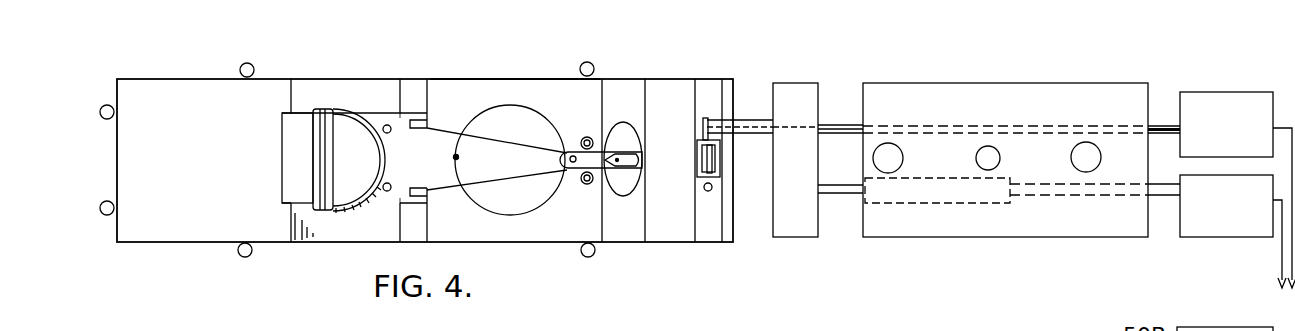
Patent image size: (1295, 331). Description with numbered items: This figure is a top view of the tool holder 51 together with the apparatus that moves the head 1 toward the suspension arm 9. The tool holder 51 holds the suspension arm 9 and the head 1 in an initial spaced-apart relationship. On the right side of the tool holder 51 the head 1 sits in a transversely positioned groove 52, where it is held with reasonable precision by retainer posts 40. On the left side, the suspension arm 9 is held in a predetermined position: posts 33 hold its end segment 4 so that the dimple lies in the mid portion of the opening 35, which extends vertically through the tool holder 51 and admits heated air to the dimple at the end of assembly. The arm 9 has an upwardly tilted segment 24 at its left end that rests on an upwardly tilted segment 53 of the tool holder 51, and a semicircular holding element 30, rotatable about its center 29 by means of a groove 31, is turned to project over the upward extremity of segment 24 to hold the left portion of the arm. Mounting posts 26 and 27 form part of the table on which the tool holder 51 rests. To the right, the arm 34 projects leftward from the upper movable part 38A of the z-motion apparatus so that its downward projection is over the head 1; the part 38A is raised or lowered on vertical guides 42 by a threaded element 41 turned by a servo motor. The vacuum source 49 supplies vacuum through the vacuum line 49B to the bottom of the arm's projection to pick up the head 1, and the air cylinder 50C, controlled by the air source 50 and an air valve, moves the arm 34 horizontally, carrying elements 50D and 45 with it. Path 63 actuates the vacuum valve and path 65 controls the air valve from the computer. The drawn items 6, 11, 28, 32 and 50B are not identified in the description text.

The head 1 is at (697, 160).
The end segment 4 is at (563, 175).
The pivot pin 6 is at (572, 156).
The suspension arm 9 is at (493, 145).
The plunger rod 11 is at (562, 160).
The upwardly tilted segment 24 is at (424, 167).
The mounting post 26 is at (113, 205).
The mounting post 27 is at (240, 70).
The pins 28 is at (387, 125).
The center 29 is at (330, 162).
The semicircular holding element 30 is at (300, 155).
The groove 31 is at (330, 107).
The cam disc 32 is at (458, 155).
The posts 33 is at (587, 137).
The arm 34 is at (752, 133).
The opening 35 is at (632, 130).
The upper movable part 38A is at (1022, 237).
The retainer posts 40 is at (700, 132).
The threaded element 41 is at (998, 148).
The vertical guides 42 is at (898, 146).
The element 45 is at (790, 237).
The vacuum source 49 is at (1208, 92).
The vacuum line 49B is at (840, 125).
The air source 50 is at (1208, 237).
The air line 50B is at (1165, 196).
The air cylinder 50C is at (937, 203).
The element 50D is at (840, 195).
The tool holder 51 is at (517, 79).
The groove 52 is at (705, 237).
The upwardly tilted segment 53 is at (390, 79).
The path 63 is at (1292, 100).
The path 65 is at (1282, 257).